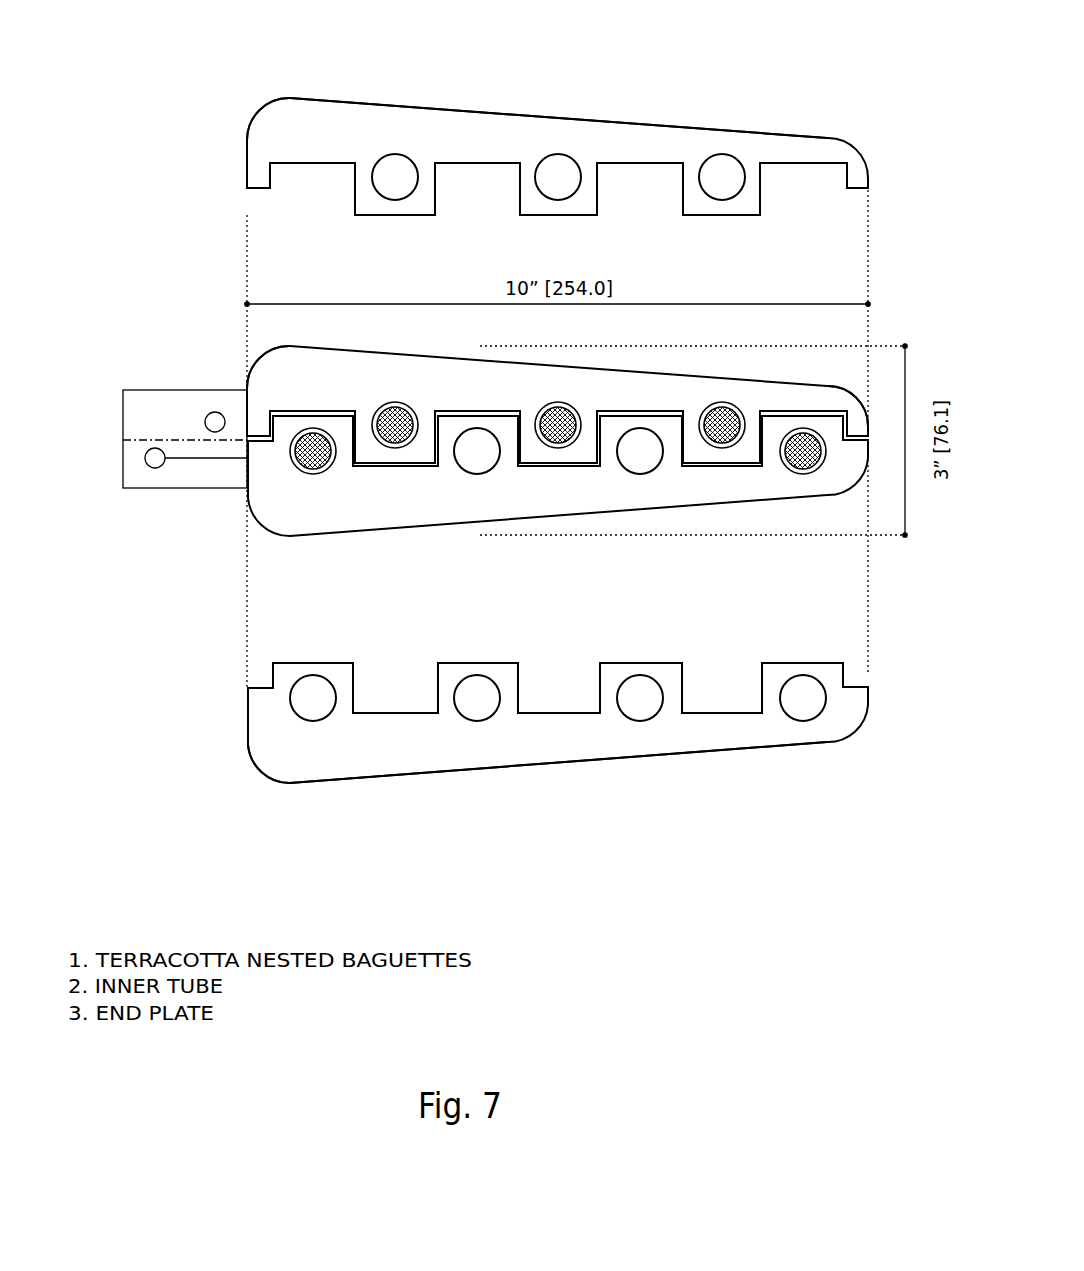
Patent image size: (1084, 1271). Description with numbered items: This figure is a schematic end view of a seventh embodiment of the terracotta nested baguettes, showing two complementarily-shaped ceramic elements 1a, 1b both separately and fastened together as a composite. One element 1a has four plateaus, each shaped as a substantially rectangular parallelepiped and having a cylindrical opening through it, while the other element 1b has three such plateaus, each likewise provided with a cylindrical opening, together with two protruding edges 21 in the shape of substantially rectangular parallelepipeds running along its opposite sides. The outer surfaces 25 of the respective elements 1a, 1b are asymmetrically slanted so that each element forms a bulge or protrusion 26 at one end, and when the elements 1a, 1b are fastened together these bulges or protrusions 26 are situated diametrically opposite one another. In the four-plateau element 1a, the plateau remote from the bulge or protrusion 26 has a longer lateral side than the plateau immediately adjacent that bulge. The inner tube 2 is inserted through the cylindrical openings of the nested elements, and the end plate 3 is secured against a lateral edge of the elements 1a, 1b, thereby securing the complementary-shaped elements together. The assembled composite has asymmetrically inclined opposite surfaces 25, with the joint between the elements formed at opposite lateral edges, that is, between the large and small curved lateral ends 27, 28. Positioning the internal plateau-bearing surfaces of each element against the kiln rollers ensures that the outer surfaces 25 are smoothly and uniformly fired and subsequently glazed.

The ceramic element 1a is at (248, 723).
The ceramic element 1b is at (247, 173).
The inner tube 2 is at (145, 458).
The end plate 3 is at (123, 409).
The protruding edge 21 is at (249, 190).
The outer surface 25 is at (545, 117).
The bulge or protrusion 26 is at (292, 97).
The large curved lateral end 27 is at (248, 500).
The small curved lateral end 28 is at (865, 410).